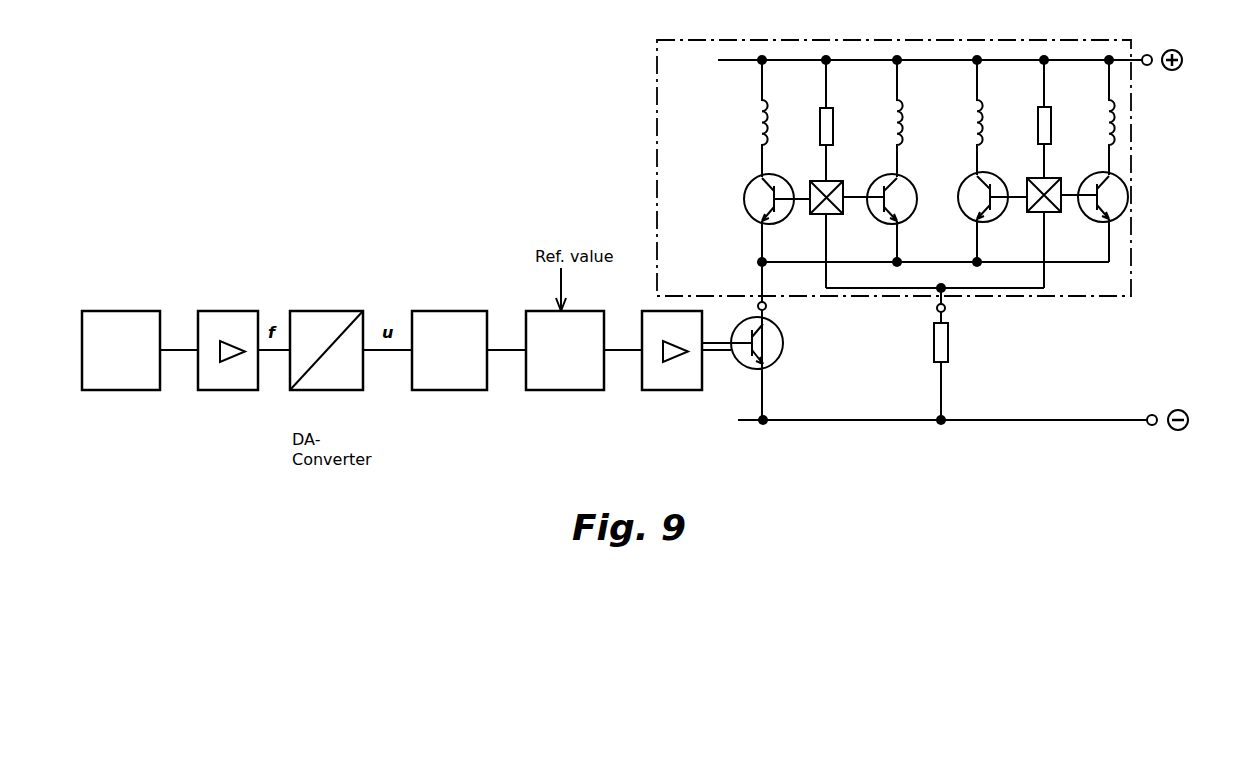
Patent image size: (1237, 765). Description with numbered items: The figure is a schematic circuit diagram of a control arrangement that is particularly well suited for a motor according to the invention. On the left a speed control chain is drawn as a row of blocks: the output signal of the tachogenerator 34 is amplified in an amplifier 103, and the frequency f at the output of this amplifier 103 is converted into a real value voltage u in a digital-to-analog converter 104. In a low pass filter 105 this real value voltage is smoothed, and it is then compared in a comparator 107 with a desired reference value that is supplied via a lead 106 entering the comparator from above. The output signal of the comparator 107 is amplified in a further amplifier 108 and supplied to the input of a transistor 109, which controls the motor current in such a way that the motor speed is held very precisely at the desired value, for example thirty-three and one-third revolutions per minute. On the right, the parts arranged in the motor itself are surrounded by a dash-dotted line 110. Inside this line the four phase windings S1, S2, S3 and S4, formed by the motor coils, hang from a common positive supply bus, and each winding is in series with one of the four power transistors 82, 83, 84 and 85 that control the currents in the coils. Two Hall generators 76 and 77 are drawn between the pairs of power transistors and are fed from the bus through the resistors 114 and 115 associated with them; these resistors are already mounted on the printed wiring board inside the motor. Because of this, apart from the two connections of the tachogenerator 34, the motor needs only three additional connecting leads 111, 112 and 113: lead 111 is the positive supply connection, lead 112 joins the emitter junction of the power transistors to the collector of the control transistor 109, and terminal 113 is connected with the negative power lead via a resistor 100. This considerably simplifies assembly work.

The tachogenerator 34 is at (116, 392).
The amplifier 103 is at (237, 390).
The digital-to-analog converter 104 is at (330, 392).
The low pass filter 105 is at (452, 392).
The lead 106 is at (564, 281).
The comparator 107 is at (573, 392).
The amplifier 108 is at (672, 392).
The transistor 109 is at (781, 352).
The resistor 100 is at (947, 354).
The dash-dotted line 110 is at (1119, 297).
The connecting lead 111 is at (1149, 54).
The connecting lead 112 is at (768, 305).
The connecting lead 113 is at (947, 307).
The resistor 114 is at (834, 116).
The resistor 115 is at (1052, 116).
The phase winding S1 is at (758, 133).
The phase winding S2 is at (903, 110).
The phase winding S3 is at (983, 110).
The phase winding S4 is at (1114, 112).
The power transistor 82 is at (743, 190).
The power transistor 83 is at (912, 177).
The power transistor 84 is at (962, 212).
The power transistor 85 is at (1128, 172).
The Hall generator 76 is at (836, 176).
The Hall generator 77 is at (1052, 175).